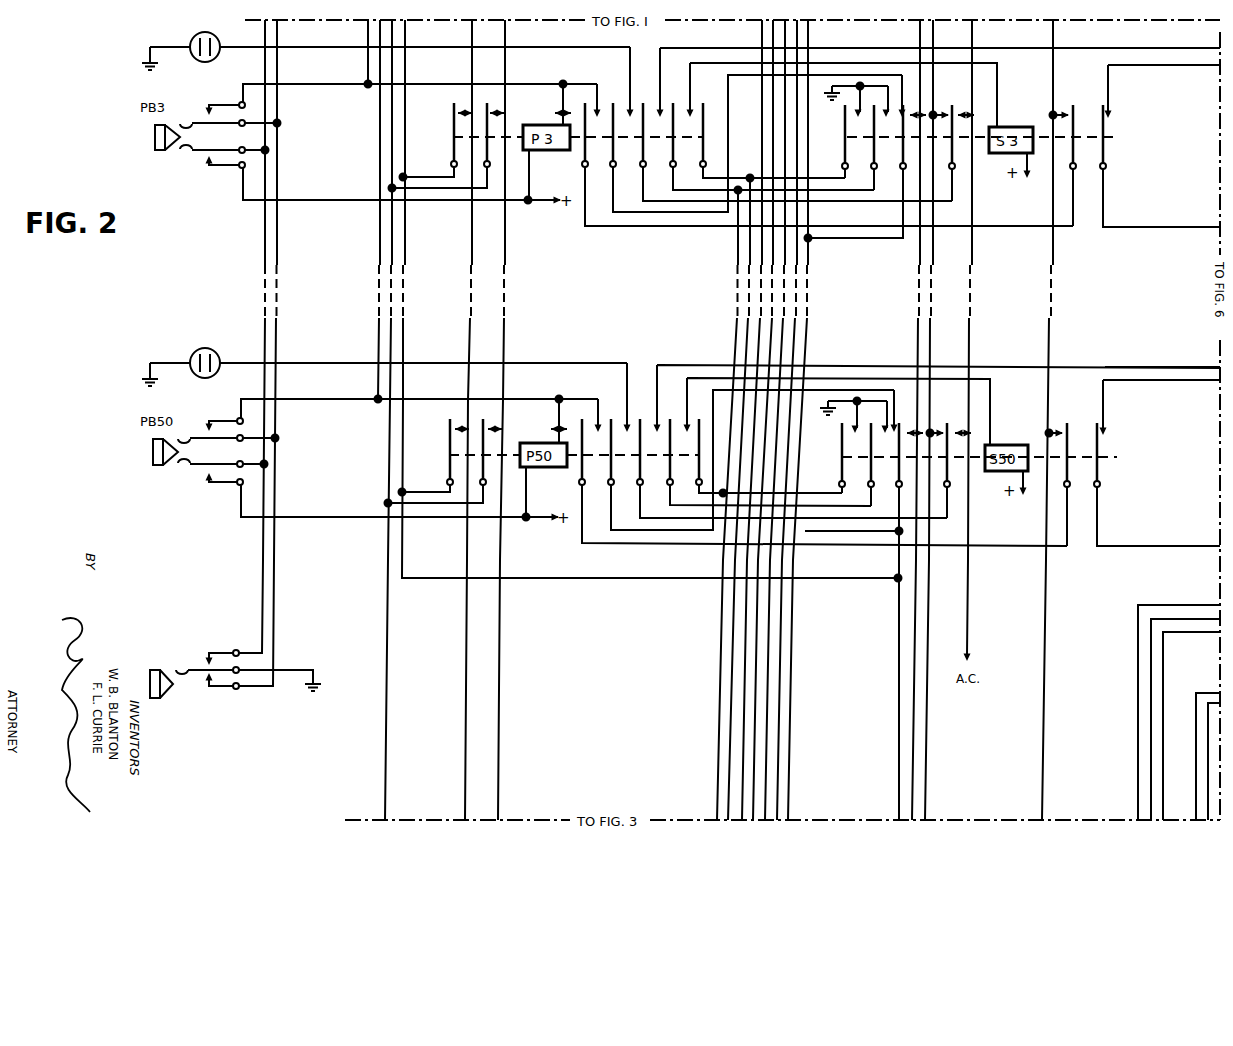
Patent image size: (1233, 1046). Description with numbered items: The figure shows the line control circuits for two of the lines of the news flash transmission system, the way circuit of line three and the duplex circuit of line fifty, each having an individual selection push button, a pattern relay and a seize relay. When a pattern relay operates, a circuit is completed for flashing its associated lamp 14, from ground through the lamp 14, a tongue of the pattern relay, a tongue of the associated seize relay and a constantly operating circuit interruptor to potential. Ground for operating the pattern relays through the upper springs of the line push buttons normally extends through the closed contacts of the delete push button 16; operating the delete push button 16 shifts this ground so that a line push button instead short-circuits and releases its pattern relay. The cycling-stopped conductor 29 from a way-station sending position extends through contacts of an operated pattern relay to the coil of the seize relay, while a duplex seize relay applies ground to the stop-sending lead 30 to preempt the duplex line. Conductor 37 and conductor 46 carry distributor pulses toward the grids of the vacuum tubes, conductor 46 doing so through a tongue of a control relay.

The lamp 14 is at (219, 45).
The delete push button 16 is at (172, 688).
The cycling-stopped conductor 29 is at (1136, 800).
The stop-sending lead 30 is at (1112, 367).
The conductor 37 is at (1196, 748).
The conductor 46 is at (1207, 779).